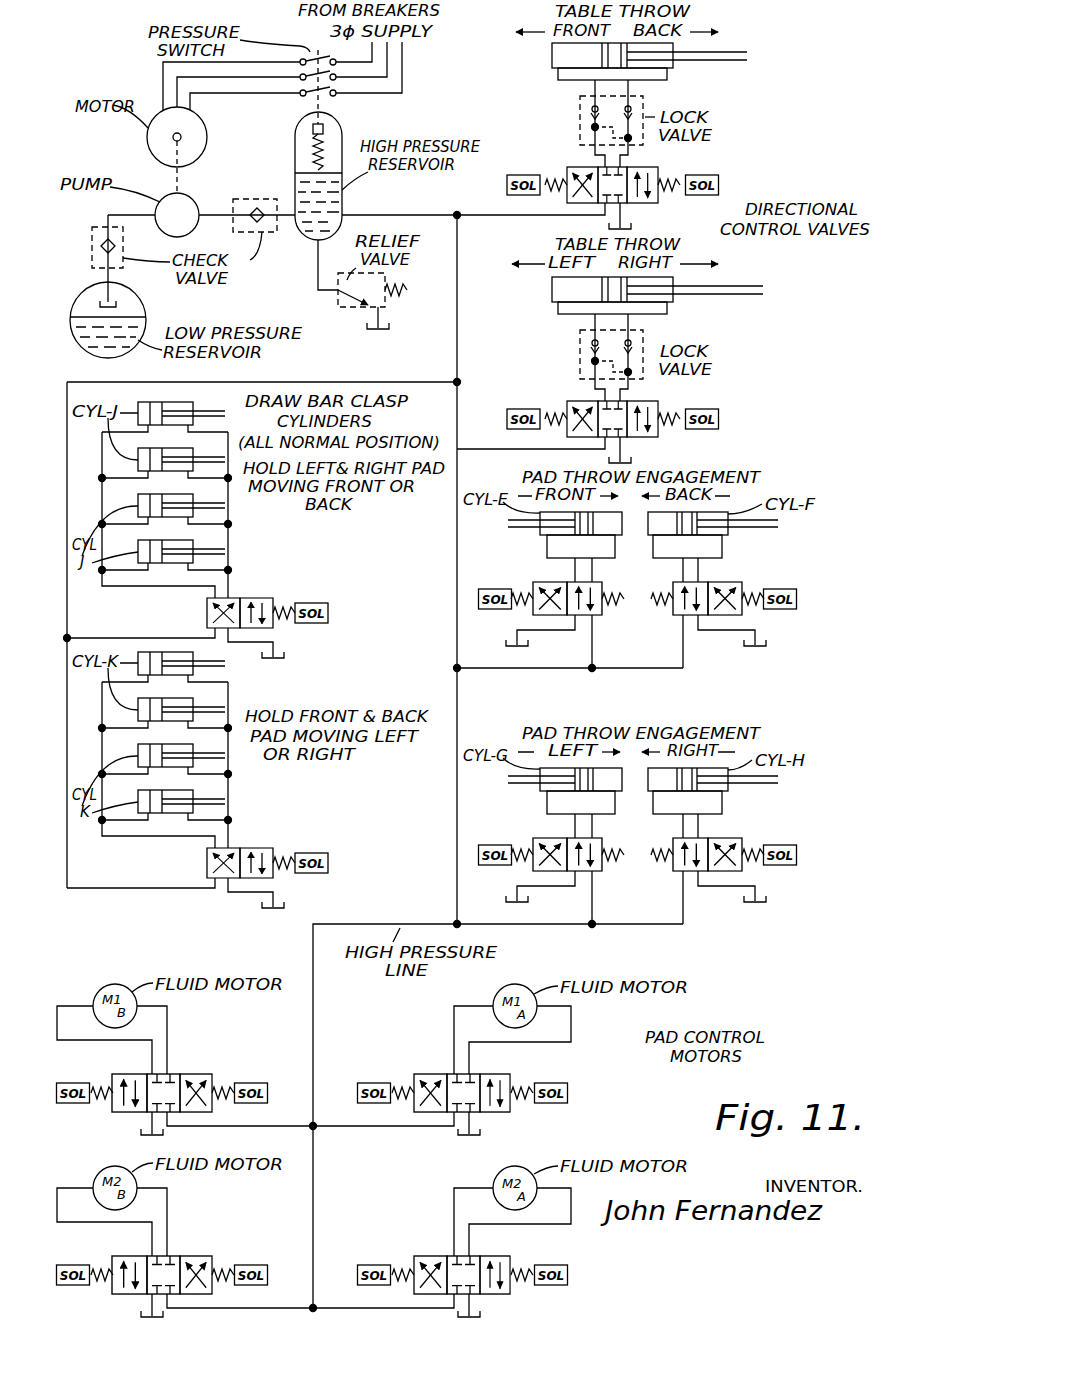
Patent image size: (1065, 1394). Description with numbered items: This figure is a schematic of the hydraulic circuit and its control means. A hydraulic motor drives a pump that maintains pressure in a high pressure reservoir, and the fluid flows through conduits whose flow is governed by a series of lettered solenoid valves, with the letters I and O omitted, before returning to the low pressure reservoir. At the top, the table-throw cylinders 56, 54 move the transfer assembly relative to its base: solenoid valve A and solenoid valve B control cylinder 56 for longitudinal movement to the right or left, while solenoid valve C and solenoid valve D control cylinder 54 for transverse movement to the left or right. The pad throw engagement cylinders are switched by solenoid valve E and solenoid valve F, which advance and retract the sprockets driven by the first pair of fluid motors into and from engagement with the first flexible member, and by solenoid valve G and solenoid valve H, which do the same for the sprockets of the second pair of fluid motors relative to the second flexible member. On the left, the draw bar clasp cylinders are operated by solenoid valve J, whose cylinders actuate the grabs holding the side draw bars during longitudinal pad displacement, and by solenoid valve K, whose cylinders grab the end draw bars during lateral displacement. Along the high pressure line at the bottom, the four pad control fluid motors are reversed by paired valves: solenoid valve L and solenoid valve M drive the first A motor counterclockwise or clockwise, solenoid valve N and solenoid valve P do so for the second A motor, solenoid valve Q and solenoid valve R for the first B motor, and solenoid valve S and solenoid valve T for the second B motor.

The cylinder 56 is at (552, 50).
The cylinder 54 is at (552, 284).
The solenoid valve A is at (537, 174).
The solenoid valve B is at (688, 176).
The solenoid valve C is at (537, 408).
The solenoid valve D is at (688, 410).
The solenoid valve E is at (506, 586).
The solenoid valve F is at (769, 588).
The solenoid valve G is at (506, 842).
The solenoid valve H is at (769, 844).
The solenoid valve J is at (300, 623).
The solenoid valve K is at (300, 873).
The solenoid valve L is at (386, 1081).
The solenoid valve M is at (539, 1081).
The solenoid valve N is at (386, 1263).
The solenoid valve P is at (539, 1263).
The solenoid valve Q is at (85, 1079).
The solenoid valve R is at (240, 1080).
The solenoid valve S is at (85, 1261).
The solenoid valve T is at (240, 1262).